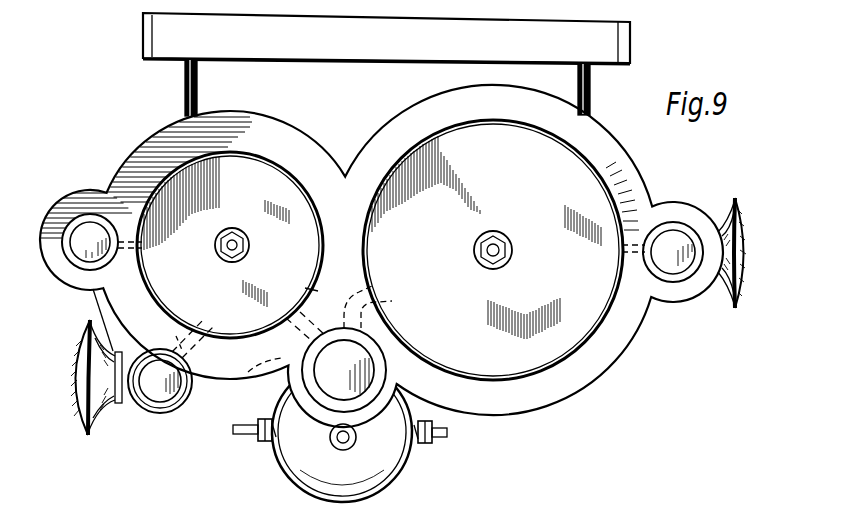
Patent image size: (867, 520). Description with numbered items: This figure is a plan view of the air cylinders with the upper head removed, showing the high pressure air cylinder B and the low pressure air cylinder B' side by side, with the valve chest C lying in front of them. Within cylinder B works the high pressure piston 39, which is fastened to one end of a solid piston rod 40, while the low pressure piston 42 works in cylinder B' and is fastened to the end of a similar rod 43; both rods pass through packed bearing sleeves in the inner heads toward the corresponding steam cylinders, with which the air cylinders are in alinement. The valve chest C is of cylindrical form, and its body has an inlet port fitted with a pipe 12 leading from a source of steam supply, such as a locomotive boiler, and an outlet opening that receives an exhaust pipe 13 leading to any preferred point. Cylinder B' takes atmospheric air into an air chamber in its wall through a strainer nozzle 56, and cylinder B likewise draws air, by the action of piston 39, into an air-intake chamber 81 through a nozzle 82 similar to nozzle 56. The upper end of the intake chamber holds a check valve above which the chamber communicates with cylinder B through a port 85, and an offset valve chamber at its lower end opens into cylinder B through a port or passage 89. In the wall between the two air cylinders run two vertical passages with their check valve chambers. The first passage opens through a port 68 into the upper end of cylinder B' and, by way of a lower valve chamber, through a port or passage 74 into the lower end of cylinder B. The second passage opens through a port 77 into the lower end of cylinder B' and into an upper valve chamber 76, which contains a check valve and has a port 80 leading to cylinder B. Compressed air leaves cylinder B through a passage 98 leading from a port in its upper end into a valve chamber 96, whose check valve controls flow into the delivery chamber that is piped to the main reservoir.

The pipe 12 is at (252, 437).
The exhaust pipe 13 is at (436, 437).
The high pressure piston 39 is at (230, 245).
The solid piston rod 40 is at (215, 244).
The low pressure piston 42 is at (493, 250).
The piston rod 43 is at (500, 250).
The strainer nozzle 56 is at (738, 216).
The port 68 is at (372, 286).
The port or passage 74 is at (295, 283).
The upper valve chamber 76 is at (307, 382).
The port 77 is at (392, 301).
The port 80 is at (250, 374).
The air-intake chamber 81 is at (134, 408).
The nozzle 82 is at (76, 398).
The port 85 is at (198, 336).
The port or passage 89 is at (176, 336).
The valve chamber 96 is at (84, 226).
The passage 98 is at (124, 216).
The high pressure air cylinder B is at (306, 122).
The low pressure air cylinder B' is at (632, 147).
The valve chest C is at (372, 480).